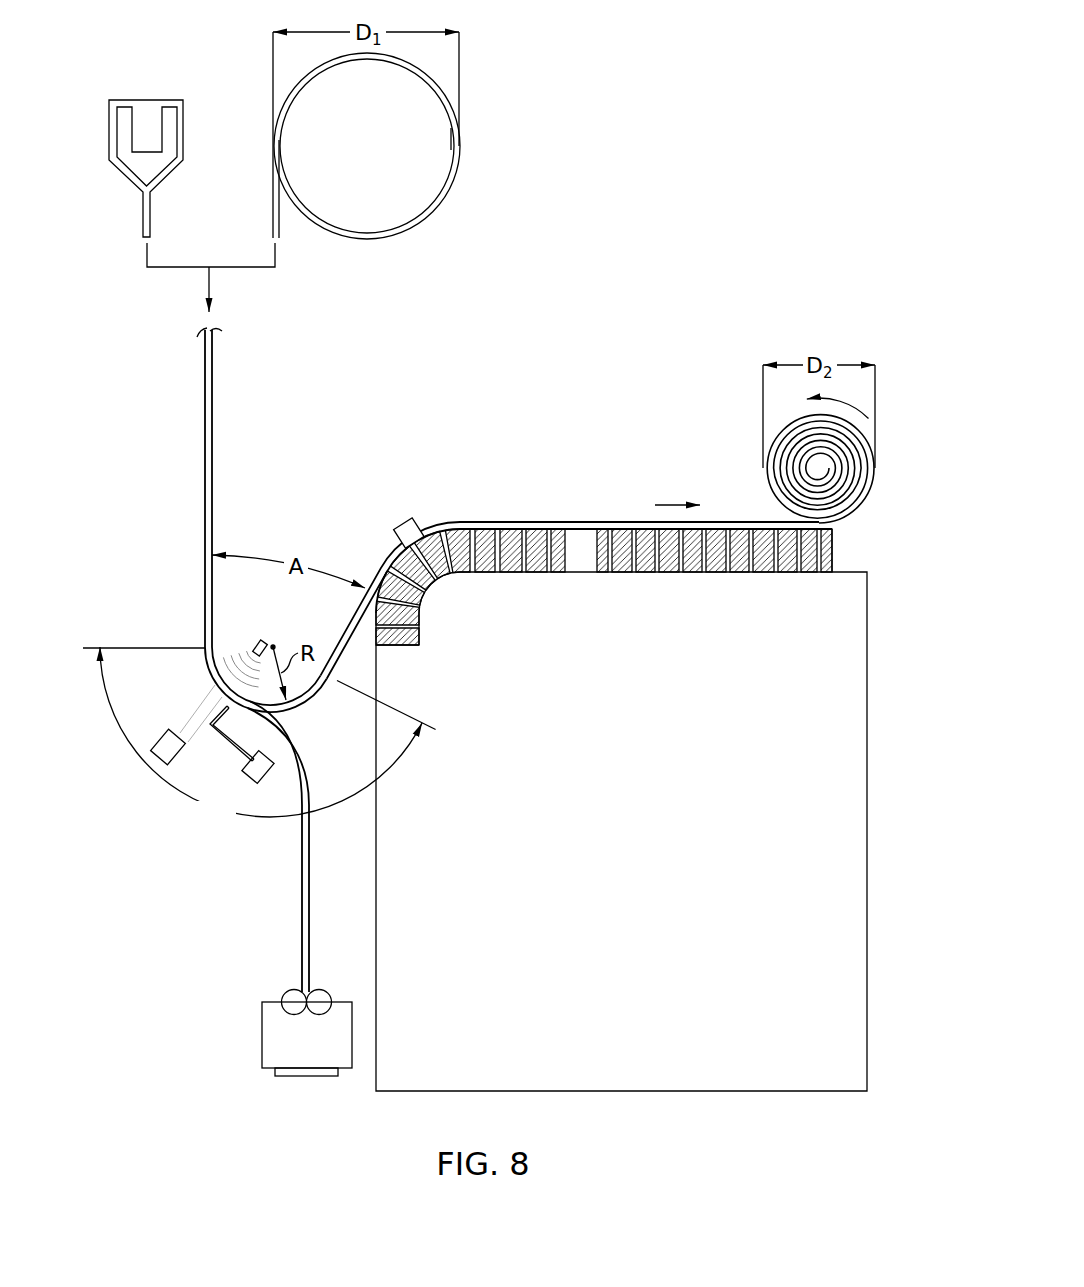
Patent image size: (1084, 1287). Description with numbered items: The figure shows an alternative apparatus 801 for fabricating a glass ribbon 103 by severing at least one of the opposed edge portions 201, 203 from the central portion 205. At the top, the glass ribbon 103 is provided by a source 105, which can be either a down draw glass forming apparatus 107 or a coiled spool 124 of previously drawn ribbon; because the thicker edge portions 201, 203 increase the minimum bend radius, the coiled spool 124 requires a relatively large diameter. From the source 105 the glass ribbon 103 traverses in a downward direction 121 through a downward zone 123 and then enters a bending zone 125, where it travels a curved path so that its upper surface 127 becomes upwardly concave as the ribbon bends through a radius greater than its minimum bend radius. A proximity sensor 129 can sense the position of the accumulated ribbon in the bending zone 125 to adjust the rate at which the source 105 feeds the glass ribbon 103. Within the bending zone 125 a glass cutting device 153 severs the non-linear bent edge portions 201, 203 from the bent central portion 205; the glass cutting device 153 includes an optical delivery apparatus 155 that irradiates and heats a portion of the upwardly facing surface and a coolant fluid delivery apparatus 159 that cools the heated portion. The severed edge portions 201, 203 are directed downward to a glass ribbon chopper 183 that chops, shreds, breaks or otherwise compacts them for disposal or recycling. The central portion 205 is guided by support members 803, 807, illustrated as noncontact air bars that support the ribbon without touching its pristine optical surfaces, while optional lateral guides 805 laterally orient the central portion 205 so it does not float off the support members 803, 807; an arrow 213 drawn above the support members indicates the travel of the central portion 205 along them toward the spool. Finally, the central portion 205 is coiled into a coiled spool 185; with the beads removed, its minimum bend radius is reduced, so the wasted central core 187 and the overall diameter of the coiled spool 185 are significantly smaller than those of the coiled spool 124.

The down draw glass forming apparatus 107 is at (164, 120).
The source 105 is at (497, 45).
The downward direction 121 is at (208, 286).
The coiled spool 124 is at (304, 183).
The glass ribbon 103 is at (213, 370).
The downward zone 123 is at (148, 646).
The alternative apparatus 801 is at (561, 321).
The lateral guides 805 is at (401, 526).
The central portion 205 is at (522, 521).
The conveying direction 213 is at (676, 504).
The wasted central core 187 is at (824, 468).
The coiled spool 185 is at (868, 495).
The support member 803 is at (505, 574).
The support member 807 is at (711, 574).
The upper surface 127 is at (242, 626).
The proximity sensor 129 is at (264, 640).
The optical delivery apparatus 155 is at (147, 755).
The bending zone 125 is at (224, 765).
The coolant fluid delivery apparatus 159 is at (262, 816).
The glass cutting device 153 is at (148, 855).
The edge portion 201 is at (302, 929).
The edge portion 203 is at (276, 847).
The glass ribbon chopper 183 is at (262, 1034).